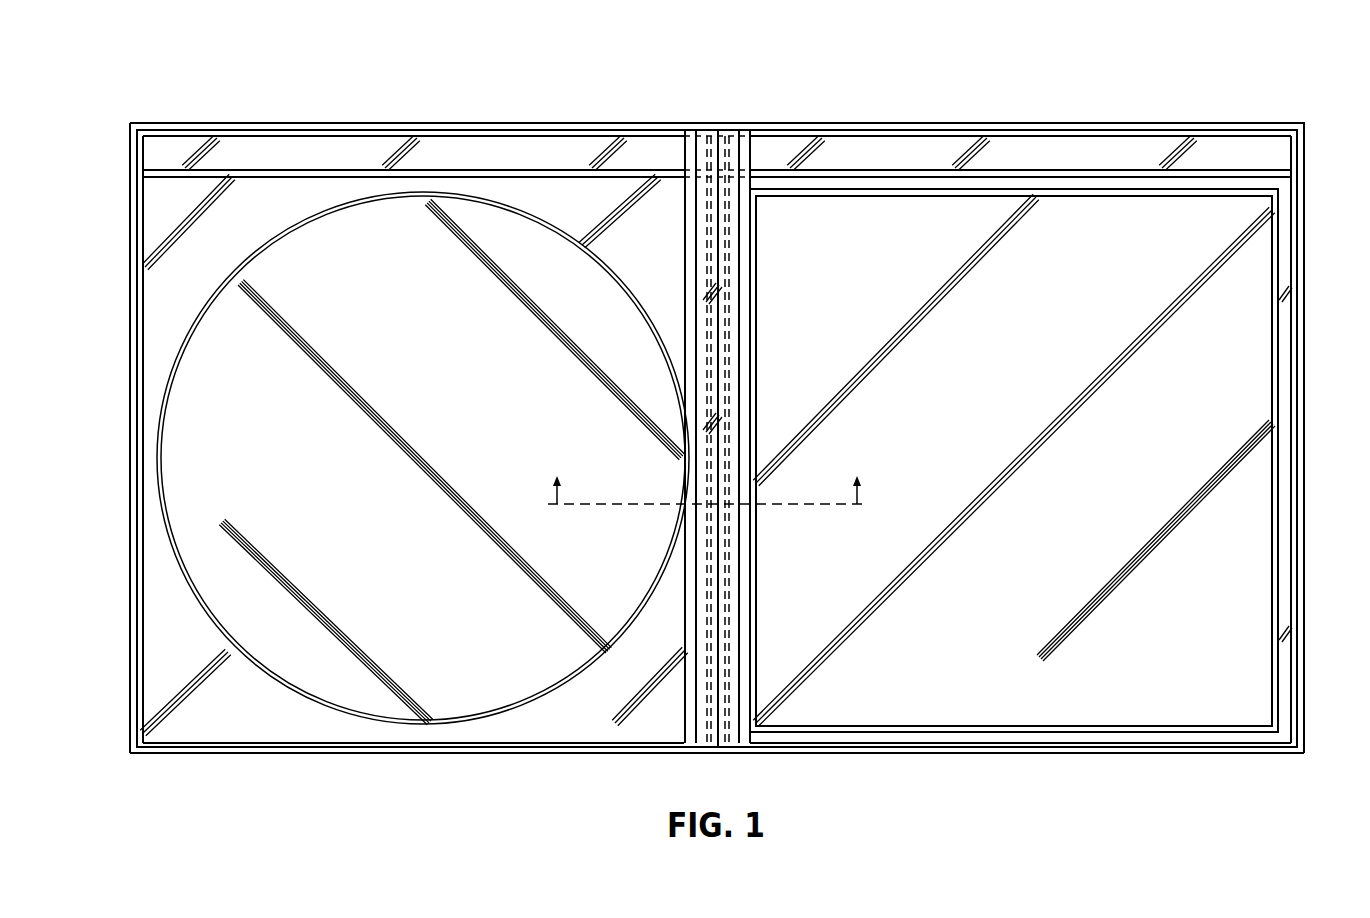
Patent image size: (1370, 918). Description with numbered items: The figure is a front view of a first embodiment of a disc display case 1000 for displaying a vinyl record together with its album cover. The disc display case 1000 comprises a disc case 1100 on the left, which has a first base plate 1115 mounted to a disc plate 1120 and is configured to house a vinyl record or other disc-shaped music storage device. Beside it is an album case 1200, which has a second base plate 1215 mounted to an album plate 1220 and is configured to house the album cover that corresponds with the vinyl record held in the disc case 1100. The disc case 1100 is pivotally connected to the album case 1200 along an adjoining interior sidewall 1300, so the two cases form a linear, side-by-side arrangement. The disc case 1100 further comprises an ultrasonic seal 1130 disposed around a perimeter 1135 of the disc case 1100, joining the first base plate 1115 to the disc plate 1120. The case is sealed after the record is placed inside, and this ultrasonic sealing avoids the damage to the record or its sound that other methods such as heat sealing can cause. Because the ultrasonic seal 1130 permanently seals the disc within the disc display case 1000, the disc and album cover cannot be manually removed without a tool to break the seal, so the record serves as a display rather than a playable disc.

The disc display case 1000 is at (1200, 60).
The disc case 1100 is at (430, 122).
The first base plate 1115 is at (131, 180).
The disc plate 1120 is at (160, 313).
The ultrasonic seal 1130 is at (130, 415).
The perimeter 1135 is at (197, 753).
The album case 1200 is at (1012, 122).
The second base plate 1215 is at (1278, 234).
The album plate 1220 is at (1257, 296).
The adjoining interior sidewall 1300 is at (713, 127).